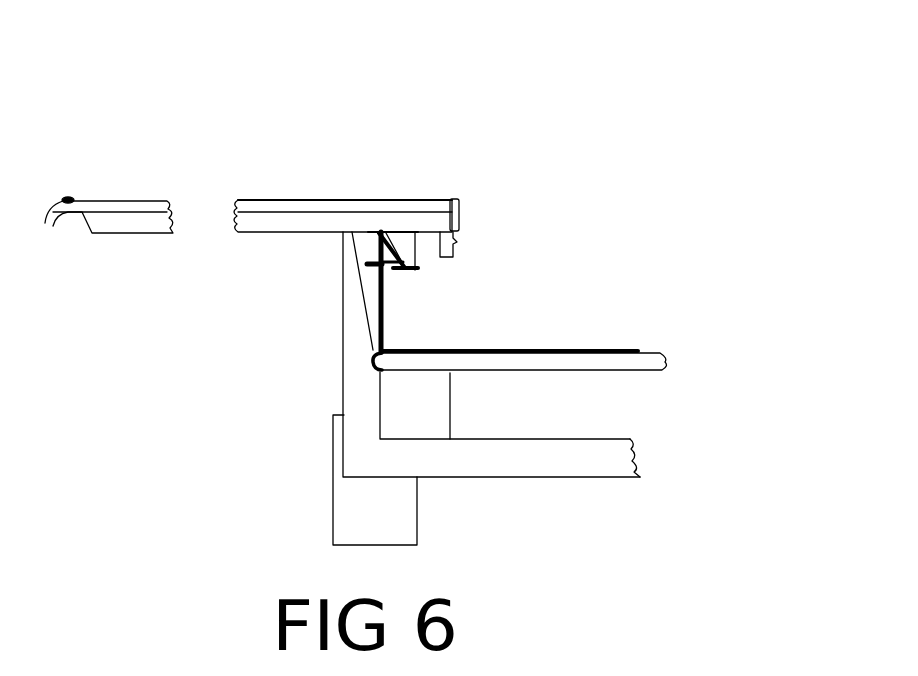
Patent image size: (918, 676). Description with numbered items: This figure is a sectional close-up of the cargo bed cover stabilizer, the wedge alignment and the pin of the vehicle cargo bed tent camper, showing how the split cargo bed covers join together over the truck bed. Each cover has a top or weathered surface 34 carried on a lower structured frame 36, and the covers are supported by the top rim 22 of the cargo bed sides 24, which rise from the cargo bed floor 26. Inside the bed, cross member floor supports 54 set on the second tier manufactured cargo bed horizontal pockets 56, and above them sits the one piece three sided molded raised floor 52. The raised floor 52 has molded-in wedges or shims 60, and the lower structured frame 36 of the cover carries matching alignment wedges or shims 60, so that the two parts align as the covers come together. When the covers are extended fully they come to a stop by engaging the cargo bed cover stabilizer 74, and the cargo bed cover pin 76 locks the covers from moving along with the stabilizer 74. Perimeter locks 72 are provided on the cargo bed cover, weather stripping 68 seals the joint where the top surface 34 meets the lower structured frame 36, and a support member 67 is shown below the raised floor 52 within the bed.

The top rim of the cargo bed sides 22 is at (361, 228).
The cargo bed sides 24 is at (332, 307).
The cargo bed floor 26 is at (593, 430).
The cargo bed cover top surface 34 is at (269, 197).
The cargo bed cover lower structured frame 36 is at (102, 240).
The one piece three sided molded raised floor 52 is at (580, 345).
The cross member floor supports 54 is at (677, 363).
The second tier manufactured cargo bed horizontal pockets 56 is at (363, 367).
The wedges or shims 60 is at (395, 240).
The support block 67 is at (380, 408).
The weather stripping 68 is at (465, 203).
The perimeter locks 72 is at (66, 195).
The cargo bed cover stabilizer 74 is at (400, 277).
The cargo bed cover pin 76 is at (465, 242).